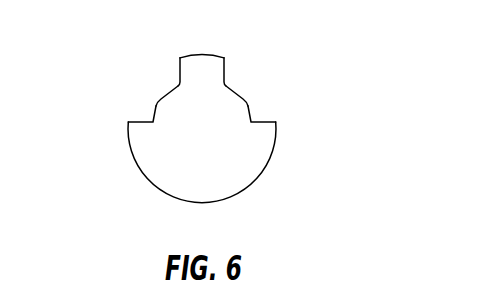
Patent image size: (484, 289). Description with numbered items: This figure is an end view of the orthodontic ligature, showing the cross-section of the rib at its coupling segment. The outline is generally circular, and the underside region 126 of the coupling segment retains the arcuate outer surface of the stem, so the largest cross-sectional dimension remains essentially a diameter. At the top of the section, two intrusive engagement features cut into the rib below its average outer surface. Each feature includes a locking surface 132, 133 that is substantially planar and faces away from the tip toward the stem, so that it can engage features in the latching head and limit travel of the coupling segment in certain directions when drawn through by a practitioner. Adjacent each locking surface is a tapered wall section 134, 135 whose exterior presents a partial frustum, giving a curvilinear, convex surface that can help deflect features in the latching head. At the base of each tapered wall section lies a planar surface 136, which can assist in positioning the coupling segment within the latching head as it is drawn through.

The underside region 126 is at (250, 185).
The locking surface 132 is at (163, 72).
The locking surface 133 is at (241, 72).
The tapered wall section 134 is at (160, 98).
The tapered wall section 135 is at (244, 98).
The planar surface 136 is at (140, 119).